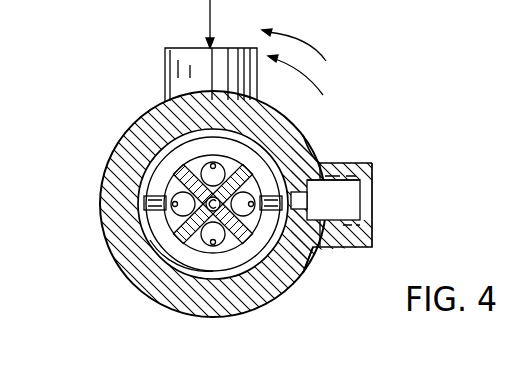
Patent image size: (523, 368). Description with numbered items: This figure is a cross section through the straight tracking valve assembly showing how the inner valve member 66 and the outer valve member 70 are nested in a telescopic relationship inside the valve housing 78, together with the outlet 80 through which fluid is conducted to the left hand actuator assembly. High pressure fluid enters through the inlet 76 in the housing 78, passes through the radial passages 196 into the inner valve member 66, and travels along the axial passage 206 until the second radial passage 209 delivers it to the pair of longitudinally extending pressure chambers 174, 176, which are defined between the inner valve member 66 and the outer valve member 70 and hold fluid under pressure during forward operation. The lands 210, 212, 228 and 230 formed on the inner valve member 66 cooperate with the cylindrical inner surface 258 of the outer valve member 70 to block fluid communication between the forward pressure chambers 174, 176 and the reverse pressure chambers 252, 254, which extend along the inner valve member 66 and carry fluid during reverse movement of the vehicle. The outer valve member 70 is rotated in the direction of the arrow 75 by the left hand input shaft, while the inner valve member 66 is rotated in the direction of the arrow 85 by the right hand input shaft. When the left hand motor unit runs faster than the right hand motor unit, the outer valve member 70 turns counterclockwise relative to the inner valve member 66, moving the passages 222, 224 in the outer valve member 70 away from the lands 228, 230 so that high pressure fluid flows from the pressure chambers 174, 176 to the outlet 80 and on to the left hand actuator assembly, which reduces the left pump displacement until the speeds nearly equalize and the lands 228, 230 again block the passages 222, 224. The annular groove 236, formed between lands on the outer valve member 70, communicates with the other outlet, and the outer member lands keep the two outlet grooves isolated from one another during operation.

The inner valve member 66 is at (172, 315).
The outer valve member 70 is at (131, 172).
The arrow 75 is at (326, 60).
The inlet 76 is at (182, 48).
The valve housing 78 is at (212, 163).
The outlet 80 is at (350, 208).
The arrow 85 is at (318, 84).
The pressure chamber 174 is at (143, 291).
The pressure chamber 176 is at (283, 152).
The radial passages 196 is at (444, 4).
The axial passage 206 is at (252, 303).
The second radial passage 209 is at (300, 172).
The land 210 is at (198, 313).
The land 212 is at (222, 180).
The passage 222 is at (147, 208).
The passage 224 is at (338, 248).
The land 228 is at (150, 229).
The land 230 is at (345, 171).
The annular groove 236 is at (289, 270).
The pressure chamber 252 is at (181, 180).
The pressure chamber 254 is at (300, 251).
The cylindrical inner surface 258 is at (217, 314).